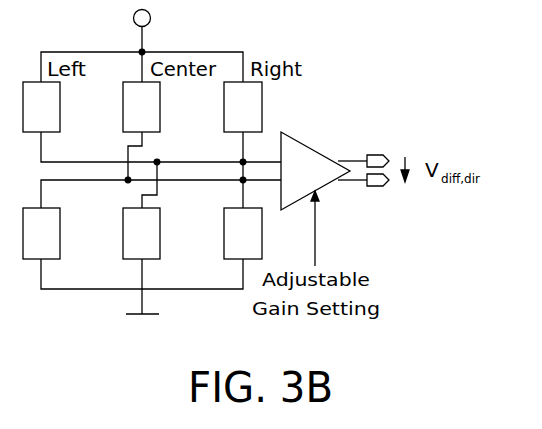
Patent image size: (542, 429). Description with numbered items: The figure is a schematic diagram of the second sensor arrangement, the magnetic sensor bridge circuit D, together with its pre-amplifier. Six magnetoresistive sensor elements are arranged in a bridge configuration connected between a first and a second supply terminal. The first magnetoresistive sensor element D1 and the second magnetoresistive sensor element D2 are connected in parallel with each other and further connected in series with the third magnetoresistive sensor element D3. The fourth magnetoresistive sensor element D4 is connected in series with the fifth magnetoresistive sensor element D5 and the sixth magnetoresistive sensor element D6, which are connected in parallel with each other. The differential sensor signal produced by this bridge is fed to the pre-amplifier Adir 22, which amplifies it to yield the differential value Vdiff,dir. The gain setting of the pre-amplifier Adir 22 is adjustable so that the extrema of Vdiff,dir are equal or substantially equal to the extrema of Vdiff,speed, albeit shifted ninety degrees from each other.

The pre-amplifier Adir 22 is at (321, 154).
The first magnetoresistive sensor element D1 is at (41, 107).
The second magnetoresistive sensor element D2 is at (243, 107).
The third magnetoresistive sensor element D3 is at (141, 233).
The fourth magnetoresistive sensor element D4 is at (141, 107).
The fifth magnetoresistive sensor element D5 is at (41, 233).
The sixth magnetoresistive sensor element D6 is at (243, 233).